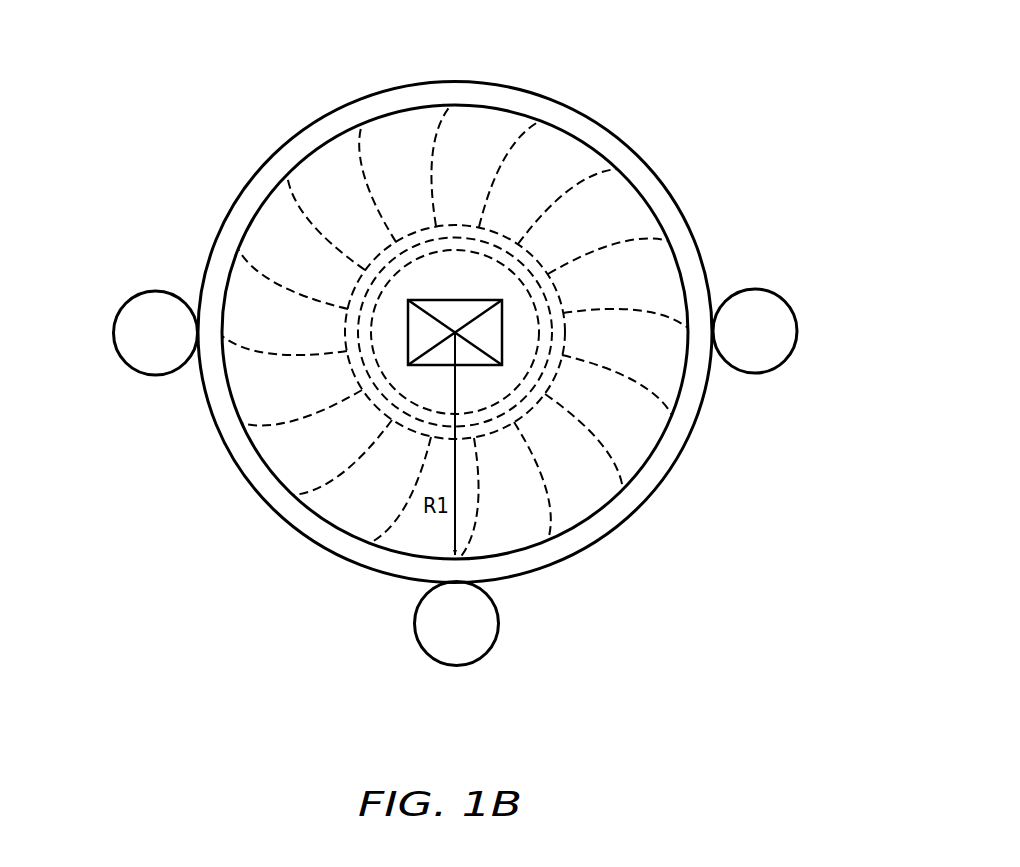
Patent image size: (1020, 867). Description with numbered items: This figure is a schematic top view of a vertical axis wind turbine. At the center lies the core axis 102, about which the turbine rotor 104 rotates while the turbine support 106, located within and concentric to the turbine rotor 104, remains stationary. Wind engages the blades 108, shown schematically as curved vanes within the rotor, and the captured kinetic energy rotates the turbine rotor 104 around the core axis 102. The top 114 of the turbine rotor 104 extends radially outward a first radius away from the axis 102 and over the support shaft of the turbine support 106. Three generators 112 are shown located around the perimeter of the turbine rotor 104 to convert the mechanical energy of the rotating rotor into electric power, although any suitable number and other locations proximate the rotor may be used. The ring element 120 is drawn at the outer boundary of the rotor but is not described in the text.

The core axis 102 is at (455, 332).
The turbine rotor 104 is at (528, 262).
The turbine support 106 is at (266, 153).
The blades 108 is at (448, 108).
The generator 112 is at (127, 303).
The top 114 is at (513, 483).
The inner shroud ring 120 is at (361, 120).